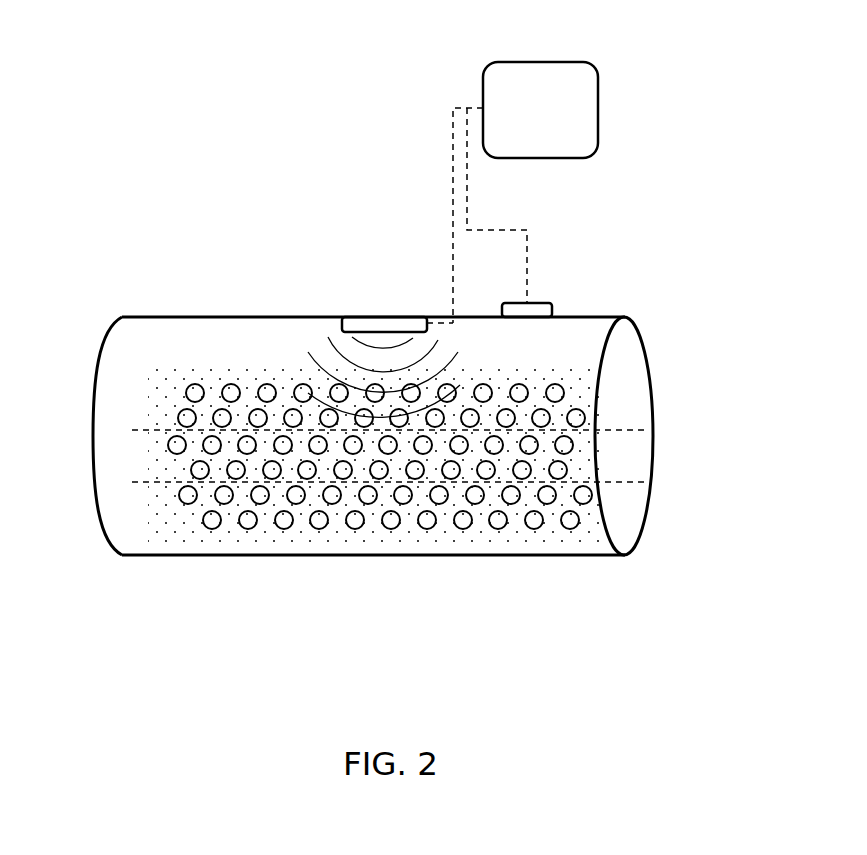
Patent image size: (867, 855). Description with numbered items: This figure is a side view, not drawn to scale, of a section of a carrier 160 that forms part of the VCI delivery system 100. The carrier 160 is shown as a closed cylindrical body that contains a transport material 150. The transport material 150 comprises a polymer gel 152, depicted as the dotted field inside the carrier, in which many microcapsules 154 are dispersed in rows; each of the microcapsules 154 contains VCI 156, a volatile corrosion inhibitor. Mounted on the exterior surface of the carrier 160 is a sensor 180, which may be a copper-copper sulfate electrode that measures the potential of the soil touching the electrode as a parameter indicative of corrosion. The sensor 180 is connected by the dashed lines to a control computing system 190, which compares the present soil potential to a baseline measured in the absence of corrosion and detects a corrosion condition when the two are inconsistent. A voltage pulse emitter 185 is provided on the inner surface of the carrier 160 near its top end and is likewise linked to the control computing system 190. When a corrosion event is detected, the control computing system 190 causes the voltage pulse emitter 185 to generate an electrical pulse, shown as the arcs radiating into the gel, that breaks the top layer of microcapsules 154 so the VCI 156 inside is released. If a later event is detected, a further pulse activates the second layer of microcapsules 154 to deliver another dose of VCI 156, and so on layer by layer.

The system 100 is at (694, 107).
The transport material 150 is at (226, 350).
The polymer gel 152 is at (573, 380).
The microcapsules 154 is at (538, 530).
The VCI 156 is at (528, 526).
The carrier 160 is at (640, 330).
The sensor 180 is at (528, 308).
The voltage pulse emitter 185 is at (383, 318).
The control computing system 190 is at (560, 119).